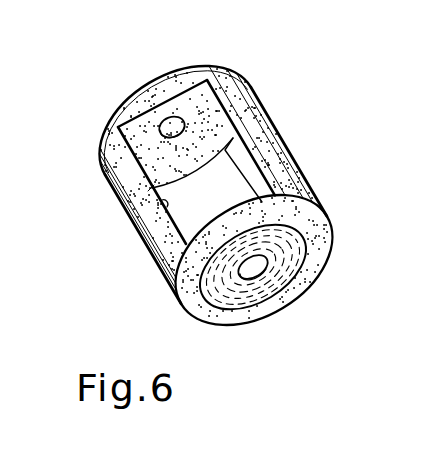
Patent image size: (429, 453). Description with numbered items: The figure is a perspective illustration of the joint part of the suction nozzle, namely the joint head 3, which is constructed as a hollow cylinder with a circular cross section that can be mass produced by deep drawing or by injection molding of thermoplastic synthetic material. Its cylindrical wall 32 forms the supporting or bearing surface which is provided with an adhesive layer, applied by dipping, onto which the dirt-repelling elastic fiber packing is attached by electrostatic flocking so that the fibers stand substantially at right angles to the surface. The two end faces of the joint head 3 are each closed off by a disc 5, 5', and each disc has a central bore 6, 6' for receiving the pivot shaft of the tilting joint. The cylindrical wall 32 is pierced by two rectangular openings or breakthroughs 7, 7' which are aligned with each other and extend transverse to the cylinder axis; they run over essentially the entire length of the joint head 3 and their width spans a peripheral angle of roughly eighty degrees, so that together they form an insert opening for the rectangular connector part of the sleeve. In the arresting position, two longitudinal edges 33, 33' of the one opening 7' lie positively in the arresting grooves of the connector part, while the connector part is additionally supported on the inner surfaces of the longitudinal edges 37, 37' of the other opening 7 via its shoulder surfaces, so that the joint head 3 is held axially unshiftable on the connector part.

The joint head 3 is at (233, 71).
The disc 5 is at (277, 267).
The disc 5' is at (152, 106).
The central bore 6 is at (280, 296).
The central bore 6' is at (158, 83).
The rectangular opening 7 is at (148, 199).
The rectangular opening 7' is at (265, 137).
The cylindrical wall 32 is at (303, 173).
The longitudinal edge 33 is at (260, 130).
The longitudinal edge 33' is at (294, 165).
The longitudinal edge 37 is at (113, 229).
The longitudinal edge 37' is at (93, 185).